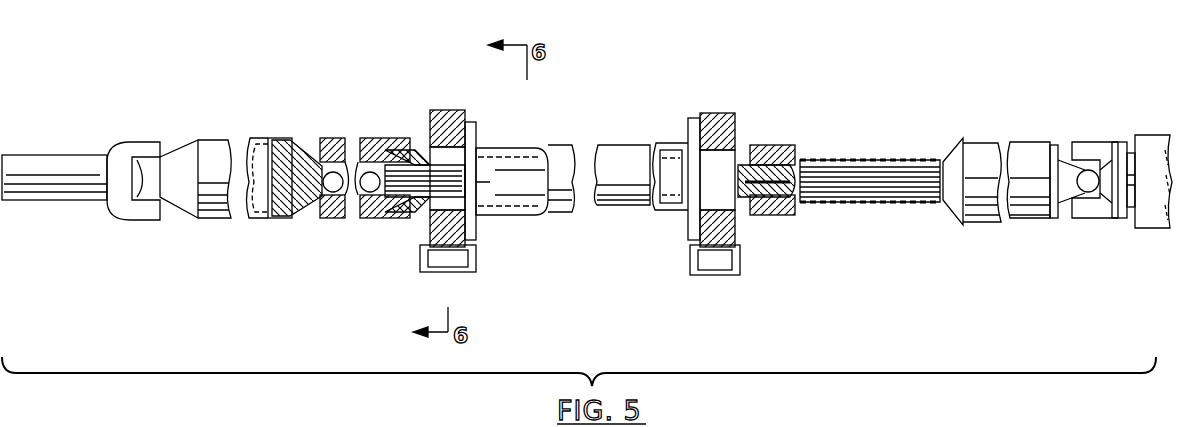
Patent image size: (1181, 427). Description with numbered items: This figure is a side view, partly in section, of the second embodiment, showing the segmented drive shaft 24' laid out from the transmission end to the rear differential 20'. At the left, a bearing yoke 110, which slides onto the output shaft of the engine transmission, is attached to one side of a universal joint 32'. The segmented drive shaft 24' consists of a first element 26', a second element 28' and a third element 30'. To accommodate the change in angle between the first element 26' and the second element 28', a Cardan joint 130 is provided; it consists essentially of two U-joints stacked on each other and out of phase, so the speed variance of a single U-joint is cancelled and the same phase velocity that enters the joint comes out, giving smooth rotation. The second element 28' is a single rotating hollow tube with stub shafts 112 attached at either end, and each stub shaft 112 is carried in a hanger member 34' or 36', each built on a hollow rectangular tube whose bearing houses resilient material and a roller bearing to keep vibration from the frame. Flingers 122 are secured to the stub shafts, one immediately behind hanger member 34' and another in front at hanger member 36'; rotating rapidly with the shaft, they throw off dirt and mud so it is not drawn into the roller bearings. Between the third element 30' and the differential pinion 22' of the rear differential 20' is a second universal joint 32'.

The bearing yoke 110 is at (78, 153).
The universal joint 32' is at (612, 180).
The first element 26' is at (210, 149).
The Cardan joint 130 is at (356, 113).
The flinger 122 is at (474, 133).
The stub shaft 112 is at (488, 203).
The hanger member 34' is at (460, 281).
The hanger member 36' is at (715, 281).
The second element 28' is at (623, 151).
The segmented drive shaft 24' is at (695, 137).
The third element 30' is at (1000, 162).
The differential pinion 22' is at (1128, 158).
The rear differential 20' is at (1143, 201).